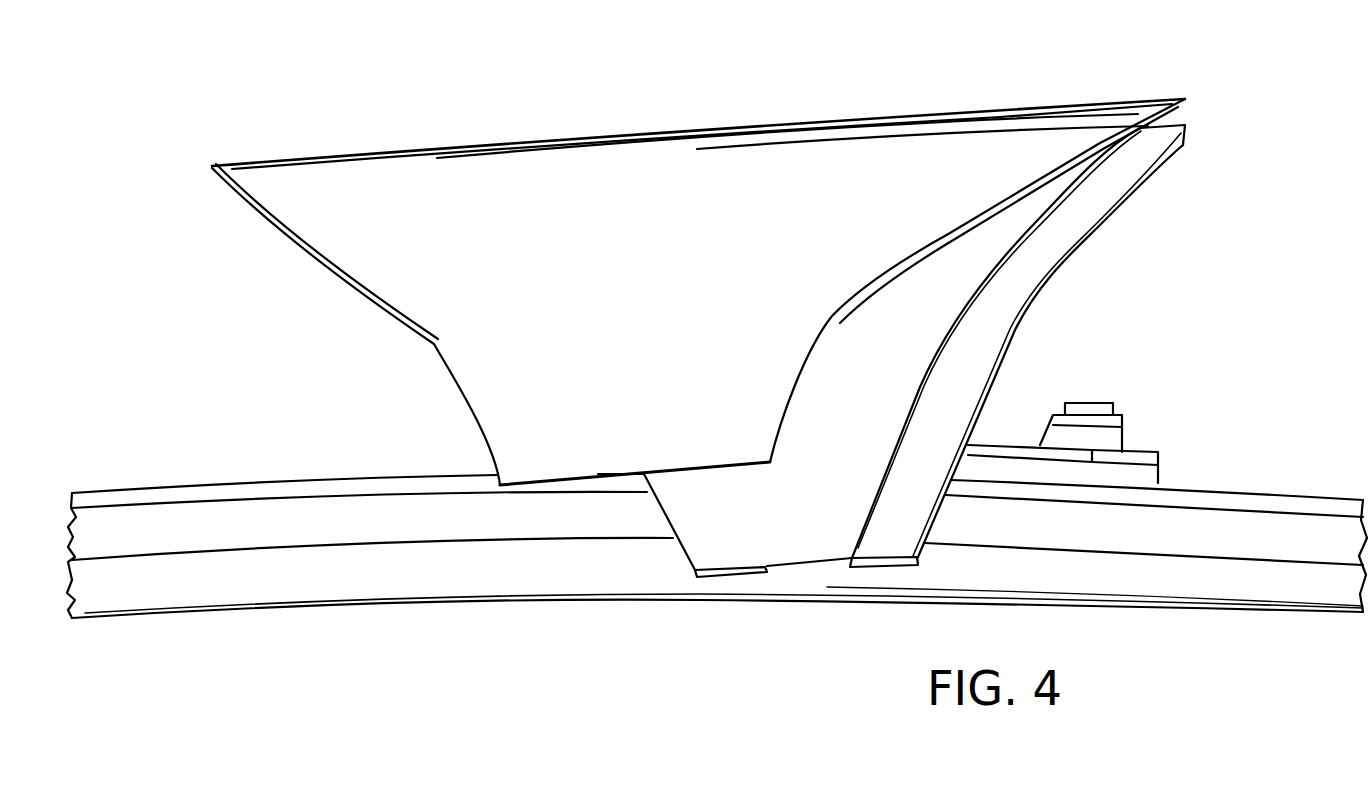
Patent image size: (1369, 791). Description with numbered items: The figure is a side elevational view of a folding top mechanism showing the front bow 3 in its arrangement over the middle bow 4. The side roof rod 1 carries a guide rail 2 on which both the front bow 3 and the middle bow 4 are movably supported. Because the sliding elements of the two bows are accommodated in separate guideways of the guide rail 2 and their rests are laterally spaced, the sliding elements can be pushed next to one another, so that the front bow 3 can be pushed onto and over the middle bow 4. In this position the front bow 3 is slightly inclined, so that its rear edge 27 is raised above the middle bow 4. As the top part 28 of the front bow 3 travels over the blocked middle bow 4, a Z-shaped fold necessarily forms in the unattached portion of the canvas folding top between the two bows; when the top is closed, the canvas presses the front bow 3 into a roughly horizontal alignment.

The side roof rod 1 is at (332, 578).
The guide rail 2 is at (228, 487).
The front bow 3 is at (698, 253).
The middle bow 4 is at (1091, 250).
The rear edge 27 is at (1157, 105).
The top part 28 is at (917, 152).